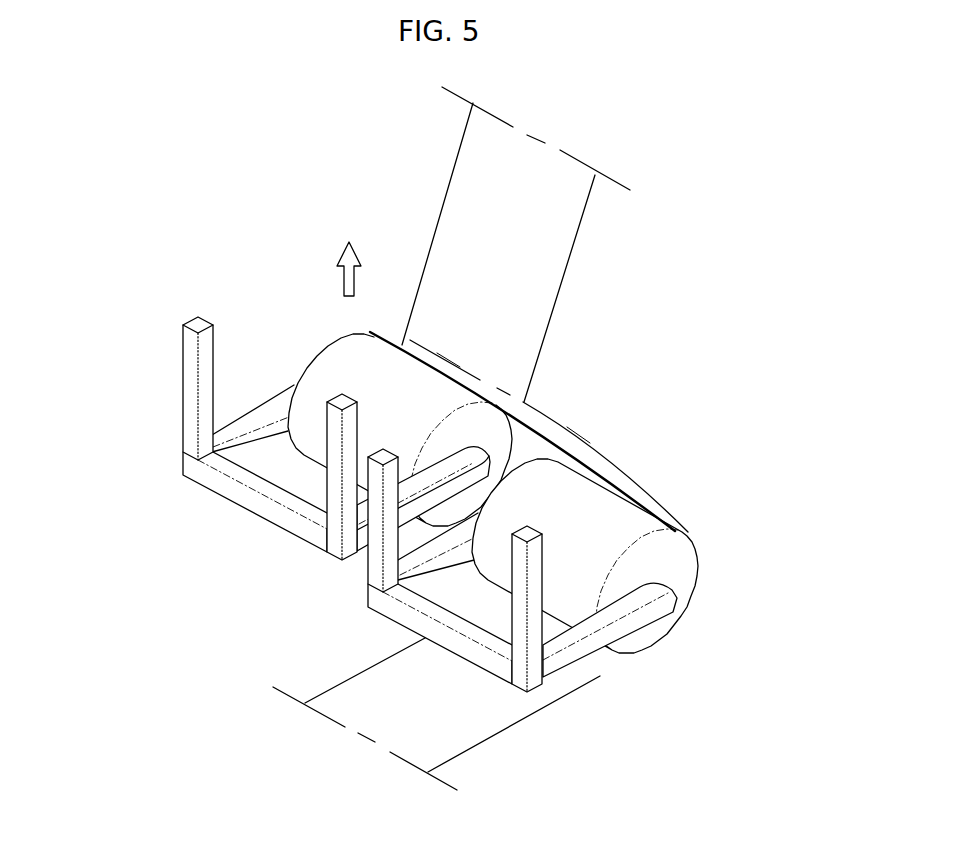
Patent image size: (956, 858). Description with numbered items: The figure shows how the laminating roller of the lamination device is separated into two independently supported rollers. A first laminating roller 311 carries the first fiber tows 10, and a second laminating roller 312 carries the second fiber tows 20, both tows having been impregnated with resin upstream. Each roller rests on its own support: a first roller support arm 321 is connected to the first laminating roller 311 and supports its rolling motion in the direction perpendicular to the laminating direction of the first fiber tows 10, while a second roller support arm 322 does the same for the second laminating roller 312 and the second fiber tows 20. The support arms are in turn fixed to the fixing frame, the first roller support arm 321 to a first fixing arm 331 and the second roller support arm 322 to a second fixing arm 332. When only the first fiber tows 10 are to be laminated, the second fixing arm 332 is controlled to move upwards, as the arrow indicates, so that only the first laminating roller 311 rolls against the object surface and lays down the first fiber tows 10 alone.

The first fiber tows 10 is at (590, 458).
The second fiber tows 20 is at (466, 206).
The first laminating roller 311 is at (690, 566).
The second laminating roller 312 is at (336, 362).
The first roller support arm 321 is at (633, 621).
The second roller support arm 322 is at (246, 429).
The first fixing arm 331 is at (533, 675).
The second fixing arm 332 is at (190, 401).